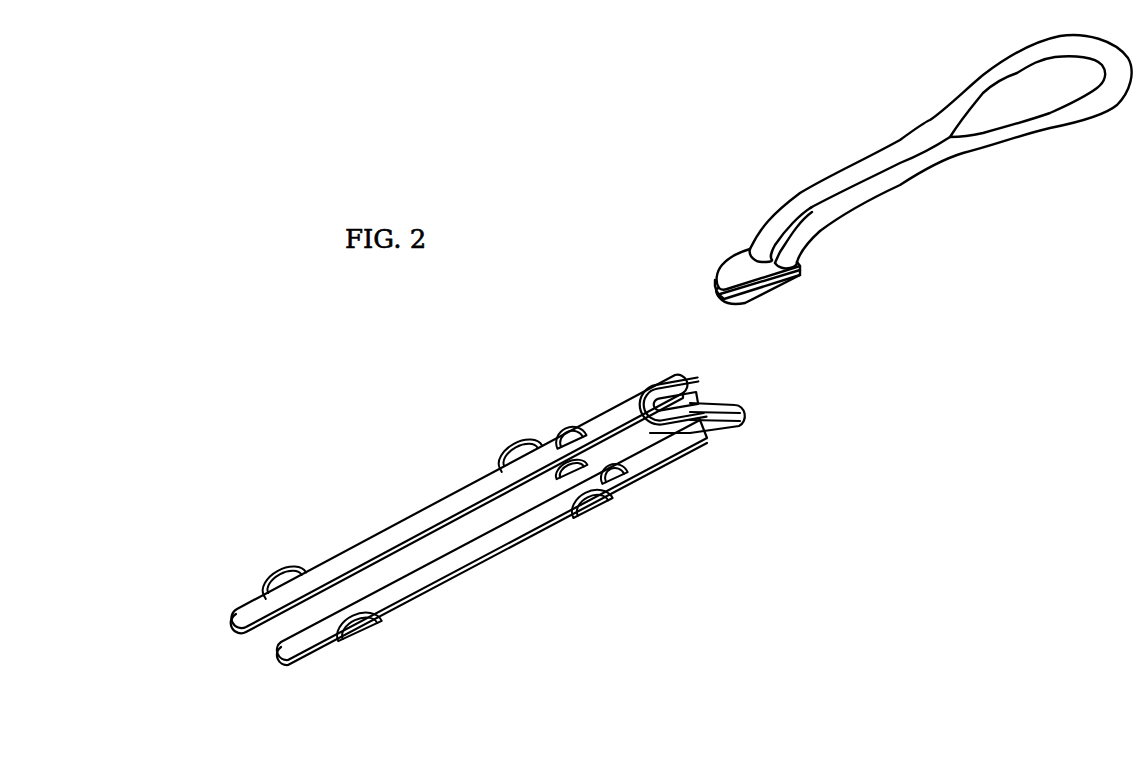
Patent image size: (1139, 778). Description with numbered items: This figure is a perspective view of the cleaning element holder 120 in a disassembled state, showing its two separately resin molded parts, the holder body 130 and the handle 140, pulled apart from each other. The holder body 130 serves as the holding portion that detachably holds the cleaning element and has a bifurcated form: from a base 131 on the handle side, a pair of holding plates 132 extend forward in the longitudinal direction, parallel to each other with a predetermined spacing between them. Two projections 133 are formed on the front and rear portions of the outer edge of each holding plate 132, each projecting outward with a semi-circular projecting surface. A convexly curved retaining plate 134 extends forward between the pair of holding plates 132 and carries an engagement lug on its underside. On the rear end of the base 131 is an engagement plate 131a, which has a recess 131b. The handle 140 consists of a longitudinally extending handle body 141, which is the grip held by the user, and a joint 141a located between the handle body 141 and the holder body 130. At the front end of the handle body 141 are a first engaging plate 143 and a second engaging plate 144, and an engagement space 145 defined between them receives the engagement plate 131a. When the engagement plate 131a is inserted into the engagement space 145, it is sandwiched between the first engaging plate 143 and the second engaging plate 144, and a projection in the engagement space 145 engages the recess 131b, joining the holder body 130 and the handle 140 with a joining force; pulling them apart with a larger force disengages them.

The cleaning element holder 120 is at (884, 388).
The holder body 130 is at (446, 472).
The base 131 is at (643, 463).
The engagement plate 131a is at (710, 402).
The recess 131b is at (697, 402).
The holding plates 132 is at (400, 533).
The projections 133 is at (510, 447).
The retaining plate 134 is at (593, 463).
The handle 140 is at (857, 135).
The handle body 141 is at (933, 163).
The joint 141a is at (790, 213).
The first engaging plate 143 is at (740, 257).
The second engaging plate 144 is at (762, 298).
The engagement space 145 is at (713, 290).